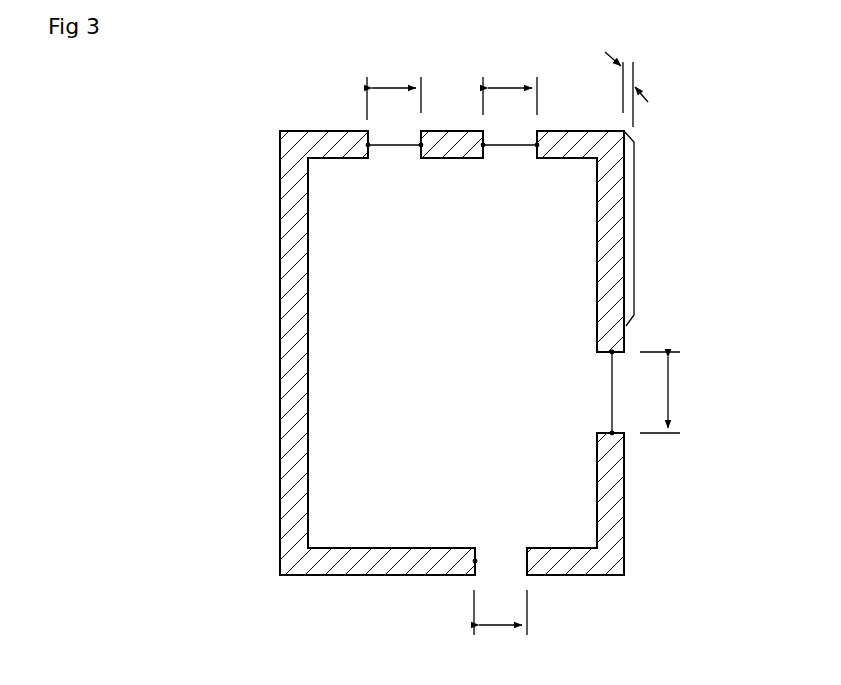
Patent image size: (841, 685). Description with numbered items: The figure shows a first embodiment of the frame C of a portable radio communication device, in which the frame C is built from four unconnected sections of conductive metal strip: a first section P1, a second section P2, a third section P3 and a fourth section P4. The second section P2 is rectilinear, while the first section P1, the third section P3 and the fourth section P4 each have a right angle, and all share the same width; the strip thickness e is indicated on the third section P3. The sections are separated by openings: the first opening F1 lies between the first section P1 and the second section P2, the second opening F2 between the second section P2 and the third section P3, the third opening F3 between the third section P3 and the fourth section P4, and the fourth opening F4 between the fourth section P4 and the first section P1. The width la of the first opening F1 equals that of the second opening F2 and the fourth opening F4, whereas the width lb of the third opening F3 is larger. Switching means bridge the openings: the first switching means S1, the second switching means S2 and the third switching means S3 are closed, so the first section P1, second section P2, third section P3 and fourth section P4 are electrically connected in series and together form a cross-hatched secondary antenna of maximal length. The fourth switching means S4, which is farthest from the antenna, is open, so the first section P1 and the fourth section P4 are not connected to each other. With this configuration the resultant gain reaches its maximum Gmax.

The first section P1 is at (290, 238).
The second section P2 is at (449, 133).
The third section P3 is at (620, 197).
The fourth section P4 is at (612, 520).
The frame C is at (291, 147).
The first opening F1 is at (375, 128).
The second opening F2 is at (527, 130).
The third opening F3 is at (620, 420).
The fourth opening F4 is at (489, 580).
The first switching means S1 is at (394, 161).
The second switching means S2 is at (510, 161).
The third switching means S3 is at (586, 392).
The fourth switching means S4 is at (526, 560).
The width of the first opening la is at (452, 348).
The width of the third opening lb is at (666, 392).
The thickness e is at (626, 186).
The maximum resultant gain Gmax is at (211, 305).